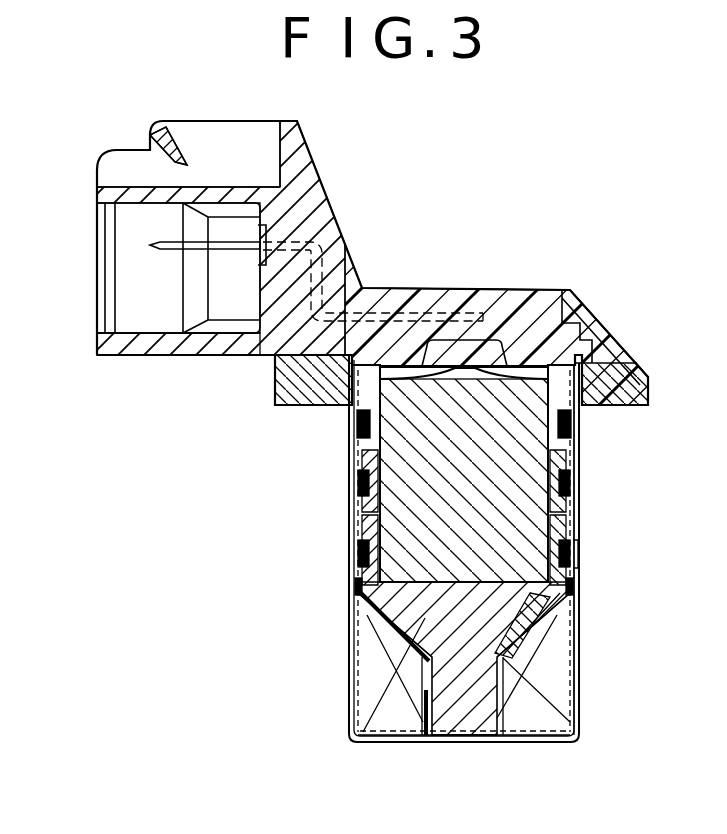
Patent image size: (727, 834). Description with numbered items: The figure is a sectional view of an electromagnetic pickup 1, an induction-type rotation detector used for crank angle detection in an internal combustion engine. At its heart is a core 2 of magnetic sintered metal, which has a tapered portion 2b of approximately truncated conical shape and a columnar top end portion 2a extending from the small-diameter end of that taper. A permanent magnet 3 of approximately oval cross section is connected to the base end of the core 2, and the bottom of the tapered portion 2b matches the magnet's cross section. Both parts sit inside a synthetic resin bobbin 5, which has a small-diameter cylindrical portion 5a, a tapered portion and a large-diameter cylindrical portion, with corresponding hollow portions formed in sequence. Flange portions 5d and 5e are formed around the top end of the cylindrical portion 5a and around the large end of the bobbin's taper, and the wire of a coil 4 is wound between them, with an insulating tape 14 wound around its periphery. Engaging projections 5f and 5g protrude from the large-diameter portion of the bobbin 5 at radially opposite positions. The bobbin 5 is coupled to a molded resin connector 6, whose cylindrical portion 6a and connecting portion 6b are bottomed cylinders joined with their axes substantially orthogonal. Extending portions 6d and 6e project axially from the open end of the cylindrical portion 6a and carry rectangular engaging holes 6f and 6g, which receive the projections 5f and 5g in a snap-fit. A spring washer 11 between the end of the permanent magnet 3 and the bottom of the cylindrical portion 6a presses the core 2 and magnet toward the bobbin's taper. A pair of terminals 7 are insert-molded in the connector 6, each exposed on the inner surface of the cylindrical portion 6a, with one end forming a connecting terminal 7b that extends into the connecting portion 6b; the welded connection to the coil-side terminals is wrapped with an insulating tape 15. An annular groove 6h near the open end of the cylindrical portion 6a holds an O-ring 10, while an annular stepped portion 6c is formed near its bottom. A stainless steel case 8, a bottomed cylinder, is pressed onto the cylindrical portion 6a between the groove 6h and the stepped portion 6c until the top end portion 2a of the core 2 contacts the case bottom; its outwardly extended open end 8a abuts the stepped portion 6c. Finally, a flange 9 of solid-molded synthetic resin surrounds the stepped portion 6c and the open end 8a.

The electromagnetic pickup 1 is at (590, 262).
The core 2 is at (459, 708).
The columnar top end portion 2a is at (503, 738).
The tapered portion 2b is at (485, 623).
The permanent magnet 3 is at (400, 437).
The coil 4 is at (527, 685).
The bobbin 5 is at (583, 598).
The small-diameter cylindrical portion 5a is at (423, 703).
The flange portion 5d is at (398, 625).
The flange portion 5e is at (368, 595).
The engaging projection 5f is at (562, 520).
The engaging projection 5g is at (372, 512).
The connector 6 is at (533, 288).
The cylindrical portion 6a is at (352, 393).
The connecting portion 6b is at (190, 343).
The annular stepped portion 6c is at (576, 330).
The extending portion 6d is at (569, 575).
The extending portion 6e is at (366, 560).
The engaging hole 6f is at (569, 485).
The engaging hole 6g is at (366, 483).
The annular groove 6h is at (571, 430).
The terminal 7 is at (358, 272).
The connecting terminal 7b is at (160, 245).
The case 8 is at (350, 670).
The open end 8a is at (590, 366).
The flange 9 is at (650, 380).
The O-ring 10 is at (576, 420).
The spring washer 11 is at (484, 366).
The insulating tape 14 is at (500, 712).
The insulating tape 15 is at (576, 553).